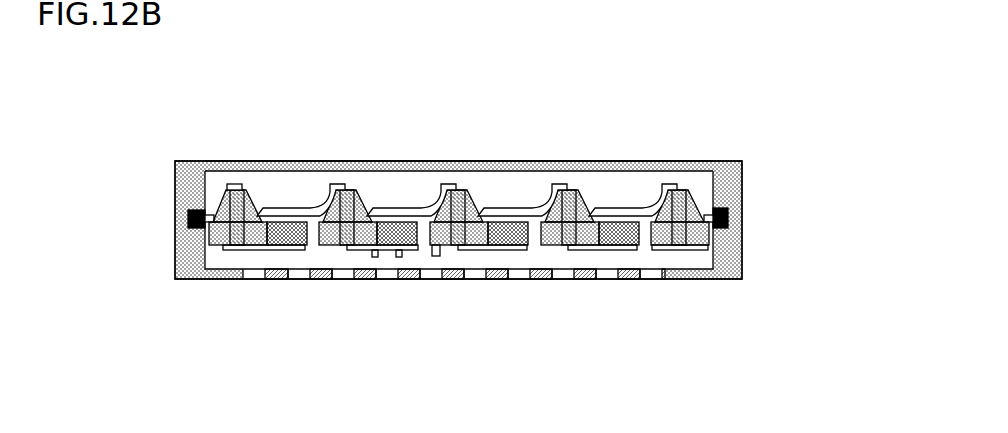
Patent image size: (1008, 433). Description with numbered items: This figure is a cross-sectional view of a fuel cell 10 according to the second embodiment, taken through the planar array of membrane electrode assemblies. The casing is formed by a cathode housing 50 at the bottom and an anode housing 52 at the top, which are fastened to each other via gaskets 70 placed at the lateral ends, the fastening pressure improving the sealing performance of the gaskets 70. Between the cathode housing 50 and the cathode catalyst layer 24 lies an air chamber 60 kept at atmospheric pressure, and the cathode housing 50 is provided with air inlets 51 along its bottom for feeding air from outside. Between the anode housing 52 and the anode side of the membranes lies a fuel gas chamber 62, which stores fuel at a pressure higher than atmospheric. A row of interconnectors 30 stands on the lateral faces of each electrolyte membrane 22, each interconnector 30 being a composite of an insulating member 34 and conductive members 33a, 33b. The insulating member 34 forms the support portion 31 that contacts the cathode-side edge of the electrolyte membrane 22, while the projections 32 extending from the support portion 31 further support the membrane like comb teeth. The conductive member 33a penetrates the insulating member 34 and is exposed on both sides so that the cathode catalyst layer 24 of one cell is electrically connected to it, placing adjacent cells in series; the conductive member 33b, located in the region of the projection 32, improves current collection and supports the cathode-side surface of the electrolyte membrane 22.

The fuel cell 10 is at (483, 417).
The electrolyte membrane 22 is at (380, 220).
The cathode catalyst layer 24 is at (517, 250).
The interconnector 30 is at (355, 205).
The support portion 31 is at (372, 258).
The projection 32 is at (399, 258).
The conductive member 33a is at (347, 198).
The conductive member 33b is at (395, 232).
The insulating member 34 is at (322, 228).
The cathode housing 50 is at (723, 277).
The air inlet 51 is at (612, 277).
The anode housing 52 is at (607, 165).
The air chamber 60 is at (472, 262).
The fuel gas chamber 62 is at (512, 183).
The gasket 70 is at (733, 207).